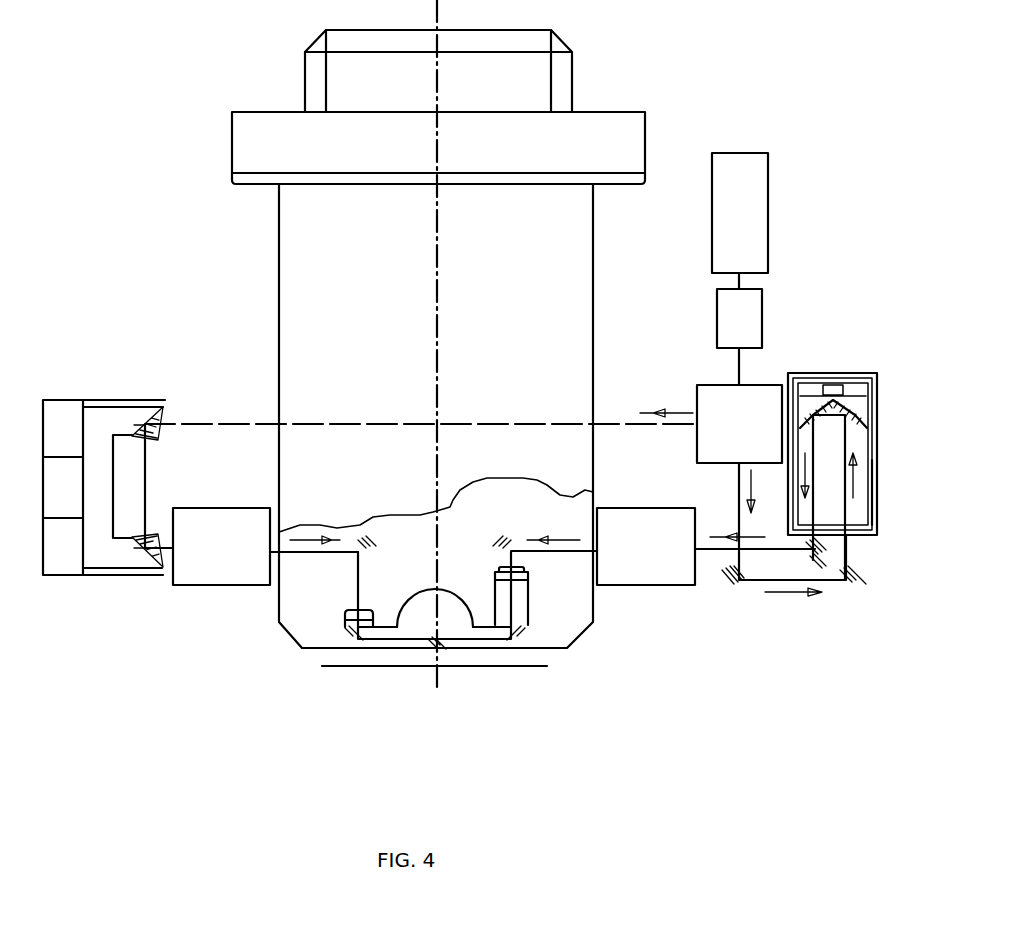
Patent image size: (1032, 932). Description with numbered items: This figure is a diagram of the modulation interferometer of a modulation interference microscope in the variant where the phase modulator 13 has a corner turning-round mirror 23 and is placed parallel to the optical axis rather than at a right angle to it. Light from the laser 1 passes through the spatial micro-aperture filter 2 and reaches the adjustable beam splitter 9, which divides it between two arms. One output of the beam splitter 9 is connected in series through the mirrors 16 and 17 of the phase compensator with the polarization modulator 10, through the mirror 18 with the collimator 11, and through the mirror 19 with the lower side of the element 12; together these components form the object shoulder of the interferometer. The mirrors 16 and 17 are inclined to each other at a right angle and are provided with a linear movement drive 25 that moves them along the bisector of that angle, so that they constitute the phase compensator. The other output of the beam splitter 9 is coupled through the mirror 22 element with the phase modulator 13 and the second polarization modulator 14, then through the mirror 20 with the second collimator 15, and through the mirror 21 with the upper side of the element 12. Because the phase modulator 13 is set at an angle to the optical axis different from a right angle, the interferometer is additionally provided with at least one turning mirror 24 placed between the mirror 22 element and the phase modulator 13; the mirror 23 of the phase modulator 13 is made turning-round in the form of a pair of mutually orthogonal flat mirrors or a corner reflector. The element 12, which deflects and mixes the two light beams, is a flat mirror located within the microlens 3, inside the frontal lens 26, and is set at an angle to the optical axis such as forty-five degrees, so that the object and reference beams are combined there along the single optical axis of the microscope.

The laser 1 is at (770, 192).
The spatial micro-aperture filter 2 is at (763, 312).
The microlens 3 is at (563, 352).
The adjustable beam splitter 9 is at (697, 388).
The polarization modulator 10 is at (202, 575).
The collimator 11 is at (345, 628).
The element for deflecting and mixing the light beams 12 is at (432, 640).
The phase modulator 13 is at (873, 513).
The second polarization modulator 14 is at (608, 525).
The second collimator 15 is at (523, 575).
The flat mirror 16 is at (140, 427).
The flat mirror 17 is at (137, 547).
The flat mirror 18 is at (358, 553).
The flat mirror 19 is at (338, 648).
The flat mirror 20 is at (525, 632).
The flat mirror 21 is at (515, 555).
The mirror element 22 is at (728, 575).
The mirror of the phase modulator 23 is at (852, 405).
The turning mirror 24 is at (815, 552).
The linear movement drive 25 is at (77, 513).
The frontal lens 26 is at (417, 617).